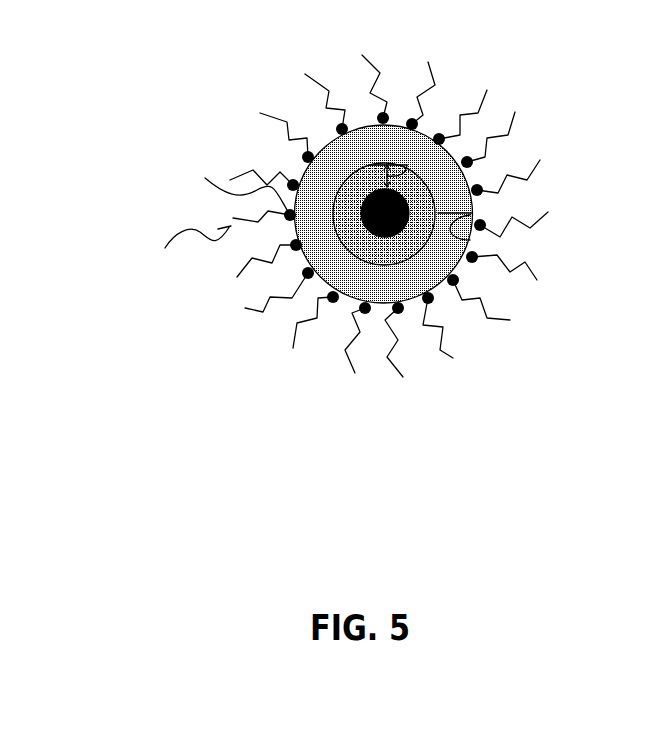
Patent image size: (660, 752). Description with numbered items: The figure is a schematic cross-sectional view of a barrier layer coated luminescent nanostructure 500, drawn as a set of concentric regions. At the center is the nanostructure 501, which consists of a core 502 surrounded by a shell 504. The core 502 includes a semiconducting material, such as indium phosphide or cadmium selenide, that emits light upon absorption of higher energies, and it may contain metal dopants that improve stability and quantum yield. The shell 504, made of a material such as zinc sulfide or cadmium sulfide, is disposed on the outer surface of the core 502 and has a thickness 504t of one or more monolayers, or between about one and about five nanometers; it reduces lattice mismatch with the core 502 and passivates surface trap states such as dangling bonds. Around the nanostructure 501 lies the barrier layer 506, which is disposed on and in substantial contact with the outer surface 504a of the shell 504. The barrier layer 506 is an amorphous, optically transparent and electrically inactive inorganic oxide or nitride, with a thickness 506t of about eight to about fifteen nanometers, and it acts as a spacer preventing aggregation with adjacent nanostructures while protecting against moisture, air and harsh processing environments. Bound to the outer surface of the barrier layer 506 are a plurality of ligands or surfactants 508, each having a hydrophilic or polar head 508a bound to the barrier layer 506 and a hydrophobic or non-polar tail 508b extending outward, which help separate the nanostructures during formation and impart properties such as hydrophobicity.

The barrier layer coated luminescent nanostructure 500 is at (358, 281).
The nanostructure 501 is at (311, 254).
The core 502 is at (367, 232).
The shell 504 is at (384, 250).
The outer surface of shell 504a is at (370, 165).
The thickness of shell 504t is at (405, 165).
The barrier layer 506 is at (388, 285).
The thickness of barrier layer 506t is at (470, 240).
The ligands or surfactants 508 is at (315, 216).
The hydrophilic or polar heads 508a is at (221, 186).
The hydrophobic or non-polar tails 508b is at (189, 253).